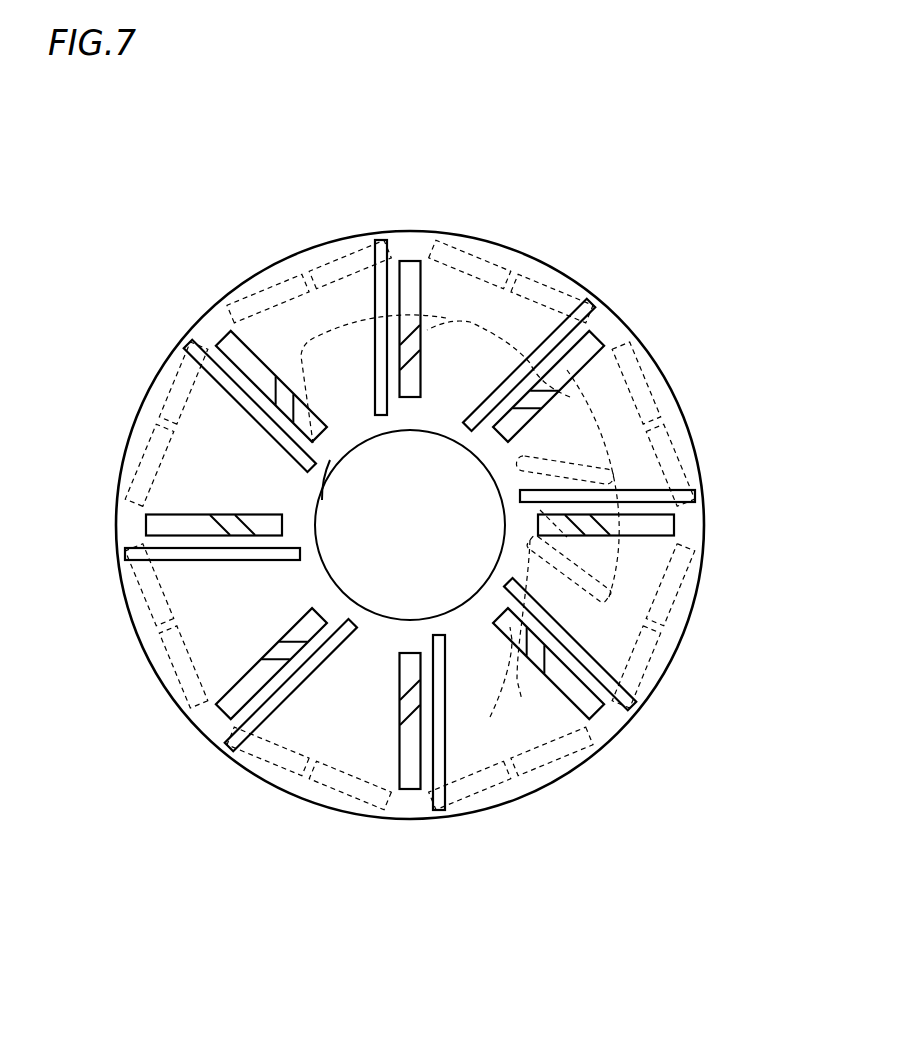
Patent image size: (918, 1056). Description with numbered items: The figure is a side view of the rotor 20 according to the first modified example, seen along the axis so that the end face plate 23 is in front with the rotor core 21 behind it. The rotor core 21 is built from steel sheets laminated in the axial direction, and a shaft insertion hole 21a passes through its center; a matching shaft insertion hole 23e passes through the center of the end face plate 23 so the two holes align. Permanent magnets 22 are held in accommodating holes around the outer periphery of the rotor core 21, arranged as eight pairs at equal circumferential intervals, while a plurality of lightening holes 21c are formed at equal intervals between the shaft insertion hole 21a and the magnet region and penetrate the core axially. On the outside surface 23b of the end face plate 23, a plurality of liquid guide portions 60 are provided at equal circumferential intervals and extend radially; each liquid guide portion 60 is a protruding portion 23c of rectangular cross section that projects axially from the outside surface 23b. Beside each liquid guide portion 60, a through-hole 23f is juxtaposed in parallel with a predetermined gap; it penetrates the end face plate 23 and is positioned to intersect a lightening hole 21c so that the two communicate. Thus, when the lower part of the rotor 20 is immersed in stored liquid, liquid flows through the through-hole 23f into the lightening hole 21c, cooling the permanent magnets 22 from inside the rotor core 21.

The rotor 20 is at (510, 142).
The rotor core 21 is at (180, 708).
The shaft insertion hole 21a is at (413, 435).
The lightening hole 21c is at (388, 762).
The permanent magnet 22 is at (128, 637).
The end face plate 23 is at (625, 322).
The outside surface 23b is at (603, 403).
The protruding portion 23c is at (410, 531).
The liquid guide portion 60 is at (257, 405).
The shaft insertion hole 23e is at (322, 500).
The through-hole 23f is at (222, 338).